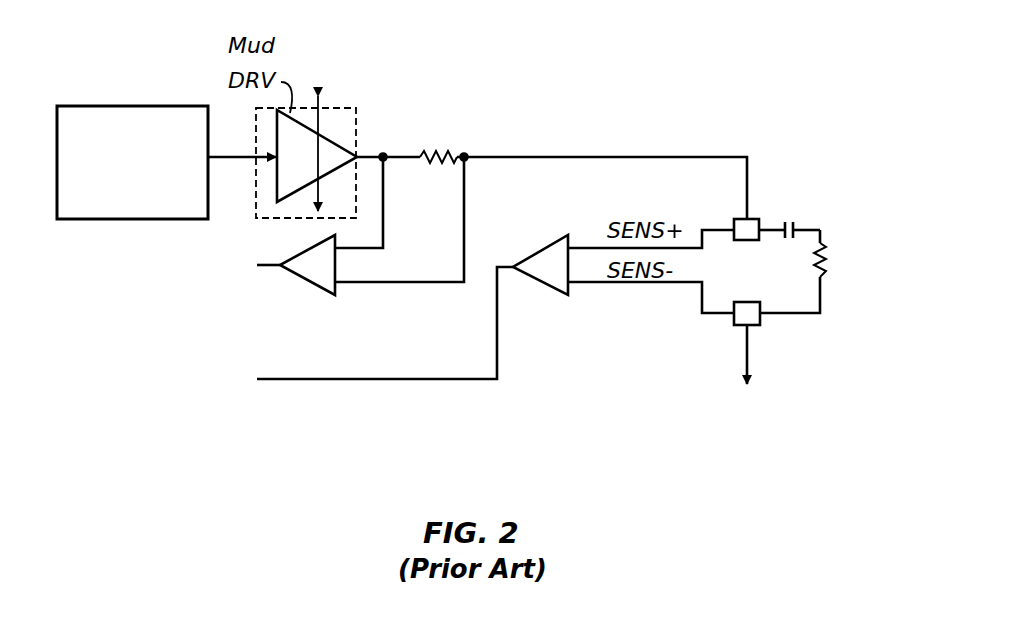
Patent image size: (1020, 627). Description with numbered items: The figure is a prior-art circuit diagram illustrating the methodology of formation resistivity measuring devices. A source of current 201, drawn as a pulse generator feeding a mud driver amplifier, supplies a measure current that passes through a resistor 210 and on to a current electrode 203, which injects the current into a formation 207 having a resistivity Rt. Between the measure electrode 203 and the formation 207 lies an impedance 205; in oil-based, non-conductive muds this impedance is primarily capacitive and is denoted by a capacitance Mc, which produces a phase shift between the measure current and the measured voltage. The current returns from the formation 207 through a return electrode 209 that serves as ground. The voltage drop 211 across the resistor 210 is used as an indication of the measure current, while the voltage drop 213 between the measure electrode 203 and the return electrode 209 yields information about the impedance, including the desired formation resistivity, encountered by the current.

The source of current 201 is at (108, 106).
The current electrode 203 is at (742, 218).
The impedance 205 is at (788, 188).
The formation 207 is at (847, 240).
The return electrode 209 is at (748, 302).
The resistor 210 is at (433, 153).
The voltage drop 211 is at (200, 263).
The voltage drop 213 is at (200, 377).